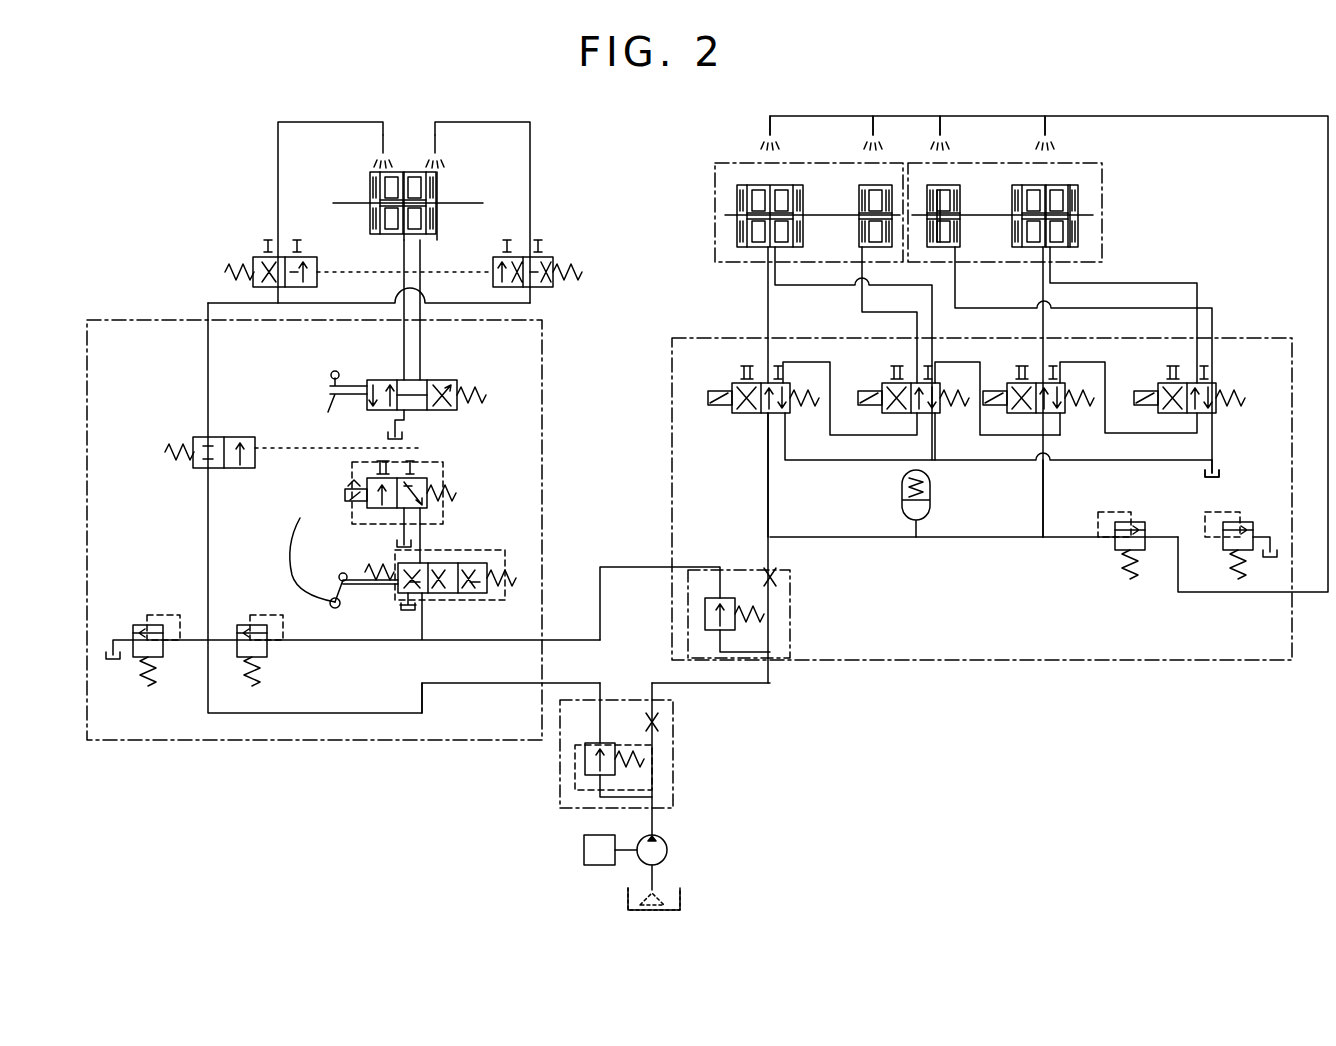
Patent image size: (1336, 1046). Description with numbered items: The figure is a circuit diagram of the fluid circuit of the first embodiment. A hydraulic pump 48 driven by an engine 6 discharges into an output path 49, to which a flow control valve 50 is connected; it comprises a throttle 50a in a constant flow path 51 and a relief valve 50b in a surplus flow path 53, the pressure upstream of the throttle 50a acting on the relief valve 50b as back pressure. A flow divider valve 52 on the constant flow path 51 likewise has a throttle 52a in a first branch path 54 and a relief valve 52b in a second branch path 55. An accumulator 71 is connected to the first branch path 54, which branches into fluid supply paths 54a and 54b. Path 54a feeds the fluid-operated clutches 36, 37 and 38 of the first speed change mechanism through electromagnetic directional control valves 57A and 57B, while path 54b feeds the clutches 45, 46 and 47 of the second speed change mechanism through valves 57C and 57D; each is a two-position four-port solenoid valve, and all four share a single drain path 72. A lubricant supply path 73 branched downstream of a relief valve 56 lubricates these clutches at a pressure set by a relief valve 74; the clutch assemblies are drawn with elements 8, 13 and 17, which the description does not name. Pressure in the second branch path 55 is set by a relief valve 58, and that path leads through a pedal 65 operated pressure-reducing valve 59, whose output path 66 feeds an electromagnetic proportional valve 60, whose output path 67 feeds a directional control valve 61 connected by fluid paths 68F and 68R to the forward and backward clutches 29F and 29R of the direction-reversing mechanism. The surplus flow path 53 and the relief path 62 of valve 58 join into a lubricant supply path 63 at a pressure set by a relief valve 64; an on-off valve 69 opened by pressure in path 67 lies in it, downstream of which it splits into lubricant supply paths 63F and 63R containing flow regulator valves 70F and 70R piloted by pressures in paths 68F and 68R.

The engine 6 is at (584, 850).
The shaft 8 is at (472, 205).
The shaft 13 is at (830, 215).
The shaft 17 is at (992, 250).
The forward directional fluid-operated clutch 29F is at (378, 192).
The backward directional fluid-operated clutch 29R is at (445, 185).
The fluid-operated clutch 36 is at (745, 185).
The fluid-operated clutch 37 is at (870, 185).
The fluid-operated clutch 38 is at (797, 190).
The fluid-operated clutch 45 is at (1020, 185).
The fluid-operated clutch 46 is at (1080, 190).
The fluid-operated clutch 47 is at (940, 185).
The hydraulic pump 48 is at (668, 850).
The output path 49 is at (652, 820).
The flow control valve 50 is at (634, 747).
The throttle 50a is at (660, 722).
The relief valve 50b is at (575, 760).
The constant flow path 51 is at (740, 683).
The flow divider valve 52 is at (759, 611).
The throttle 52a is at (778, 577).
The relief valve 52b is at (705, 612).
The surplus flow path 53 is at (473, 683).
The first branch path 54 is at (770, 545).
The fluid supply path 54a is at (768, 462).
The fluid supply path 54b is at (1043, 492).
The second branch path 55 is at (620, 567).
The relief valve 56 is at (1112, 552).
The electromagnetic directional control valve 57A is at (742, 383).
The electromagnetic directional control valve 57B is at (893, 383).
The electromagnetic directional control valve 57C is at (1015, 383).
The electromagnetic directional control valve 57D is at (1215, 383).
The relief valve 58 is at (248, 625).
The pressure-reducing valve 59 is at (478, 593).
The electromagnetic proportional valve 60 is at (445, 478).
The directional control valve 61 is at (457, 383).
The relief path 62 is at (225, 650).
The lubricant supply path 63 is at (208, 512).
The lubricant supply path 63F is at (278, 210).
The lubricant supply path 63R is at (530, 220).
The relief valve 64 is at (143, 625).
The pedal 65 is at (280, 560).
The output path 66 is at (420, 530).
The output path 67 is at (420, 435).
The fluid path 68F is at (404, 348).
The fluid path 68R is at (420, 352).
The on-off valve 69 is at (245, 437).
The flow regulator valve 70F is at (253, 272).
The flow regulator valve 70R is at (540, 290).
The accumulator 71 is at (930, 492).
The drain path 72 is at (1215, 460).
The lubricant supply path 73 is at (1328, 212).
The relief valve 74 is at (1243, 522).